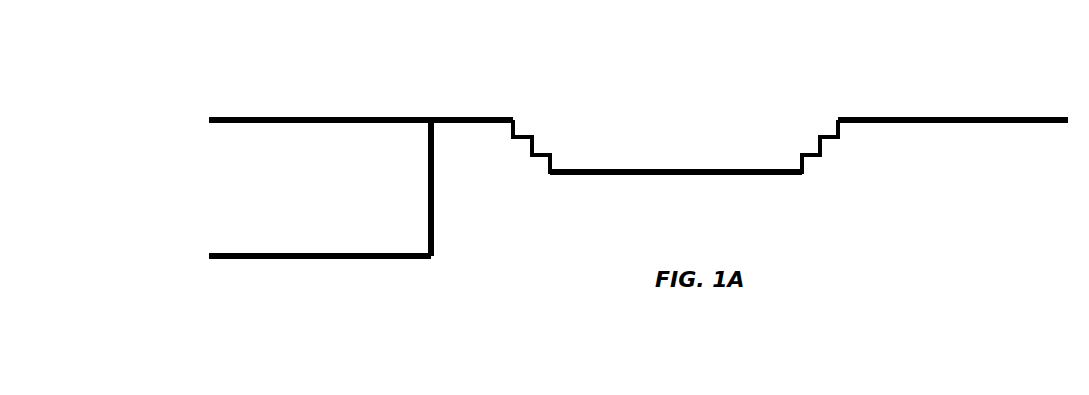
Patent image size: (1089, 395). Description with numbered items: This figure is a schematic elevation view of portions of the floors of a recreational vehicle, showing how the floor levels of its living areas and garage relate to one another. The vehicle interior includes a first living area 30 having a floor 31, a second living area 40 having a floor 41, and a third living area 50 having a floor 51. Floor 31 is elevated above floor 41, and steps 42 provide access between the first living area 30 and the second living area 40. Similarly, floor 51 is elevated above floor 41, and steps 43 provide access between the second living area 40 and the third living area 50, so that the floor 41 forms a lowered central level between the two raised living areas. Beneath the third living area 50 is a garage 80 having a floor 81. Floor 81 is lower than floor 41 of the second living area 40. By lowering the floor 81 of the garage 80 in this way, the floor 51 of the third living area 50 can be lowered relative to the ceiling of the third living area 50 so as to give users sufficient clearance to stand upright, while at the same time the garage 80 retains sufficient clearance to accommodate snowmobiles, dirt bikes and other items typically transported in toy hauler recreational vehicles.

The first living area 30 is at (1052, 90).
The floor 31 is at (951, 118).
The second living area 40 is at (640, 100).
The floor 41 is at (733, 170).
The steps 42 is at (825, 138).
The steps 43 is at (528, 136).
The third living area 50 is at (232, 89).
The floor 51 is at (361, 118).
The garage 80 is at (218, 216).
The floor 81 is at (361, 254).